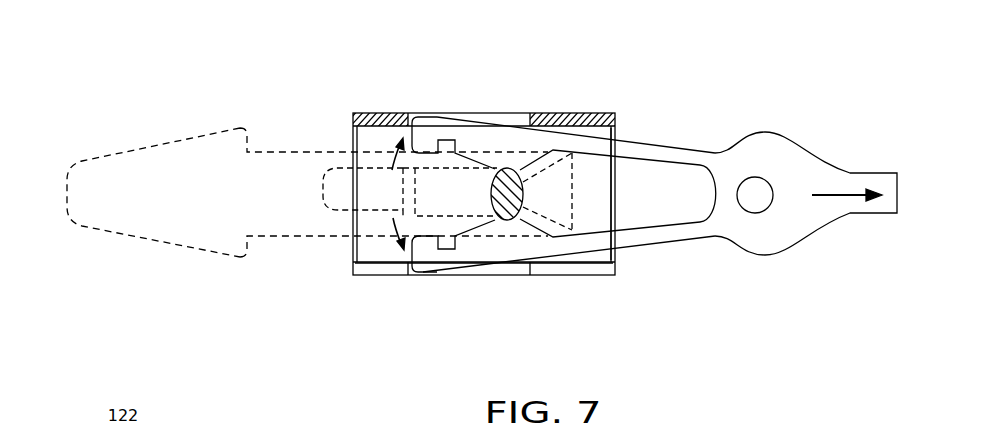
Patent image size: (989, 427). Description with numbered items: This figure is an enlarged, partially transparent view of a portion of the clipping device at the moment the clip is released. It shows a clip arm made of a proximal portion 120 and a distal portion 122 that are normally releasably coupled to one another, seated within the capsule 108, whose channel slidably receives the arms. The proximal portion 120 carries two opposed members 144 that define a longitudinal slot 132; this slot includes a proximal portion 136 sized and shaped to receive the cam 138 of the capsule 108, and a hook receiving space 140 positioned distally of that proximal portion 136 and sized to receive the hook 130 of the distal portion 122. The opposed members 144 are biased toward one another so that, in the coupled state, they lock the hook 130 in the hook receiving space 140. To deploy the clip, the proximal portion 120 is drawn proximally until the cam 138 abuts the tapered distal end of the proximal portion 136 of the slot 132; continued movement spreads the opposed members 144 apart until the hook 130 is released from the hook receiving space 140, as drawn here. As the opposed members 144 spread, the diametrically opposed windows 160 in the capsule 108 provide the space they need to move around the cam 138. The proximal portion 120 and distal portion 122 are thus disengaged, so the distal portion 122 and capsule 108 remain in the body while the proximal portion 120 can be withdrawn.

The capsule 108 is at (602, 113).
The proximal portion 120 is at (726, 226).
The distal portion 122 is at (283, 200).
The hook 130 is at (372, 215).
The longitudinal slot 132 is at (590, 148).
The proximal portion of the slot 136 is at (500, 118).
The cam 138 is at (497, 212).
The hook receiving space 140 is at (448, 140).
The opposed members 144 is at (420, 142).
The windows 160 is at (512, 275).